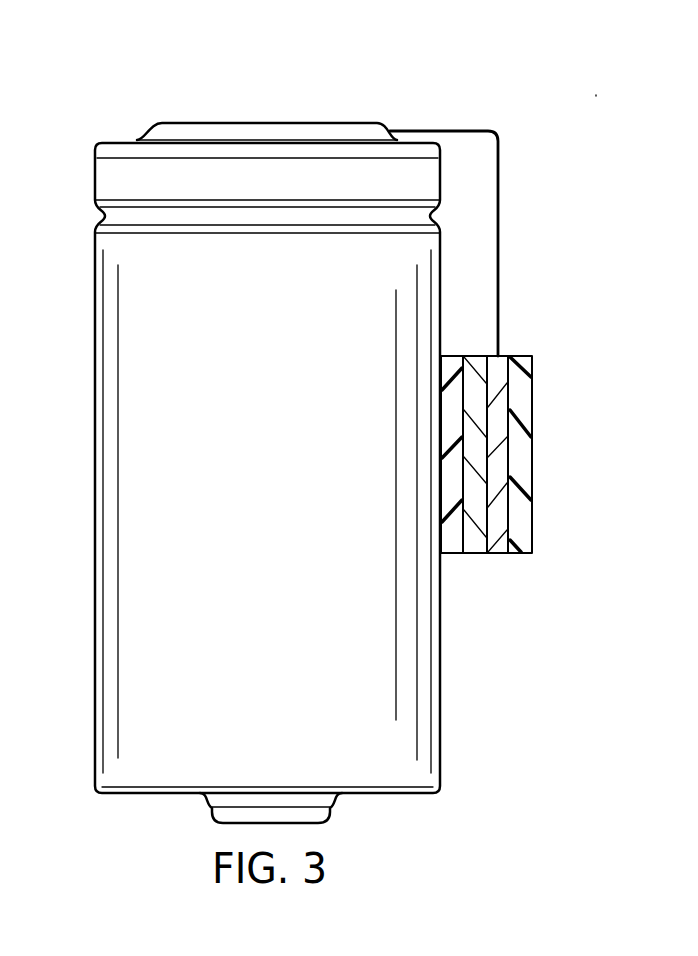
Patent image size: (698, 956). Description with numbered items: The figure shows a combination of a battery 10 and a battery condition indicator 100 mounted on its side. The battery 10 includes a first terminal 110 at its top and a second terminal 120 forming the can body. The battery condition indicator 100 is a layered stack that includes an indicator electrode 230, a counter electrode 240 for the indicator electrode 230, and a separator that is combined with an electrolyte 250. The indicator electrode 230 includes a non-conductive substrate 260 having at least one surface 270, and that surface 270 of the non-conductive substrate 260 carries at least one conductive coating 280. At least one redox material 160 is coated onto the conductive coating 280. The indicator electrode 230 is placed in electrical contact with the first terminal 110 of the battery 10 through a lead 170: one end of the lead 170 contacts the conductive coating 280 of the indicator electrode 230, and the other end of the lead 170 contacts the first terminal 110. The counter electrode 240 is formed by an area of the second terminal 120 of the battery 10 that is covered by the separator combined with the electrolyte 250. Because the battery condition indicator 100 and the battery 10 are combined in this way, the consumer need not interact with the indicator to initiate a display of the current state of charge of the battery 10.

The battery 10 is at (574, 120).
The battery condition indicator 100 is at (503, 457).
The first terminal 110 is at (268, 123).
The second terminal 120 is at (441, 700).
The redox material 160 is at (478, 547).
The lead 170 is at (498, 248).
The indicator electrode 230 is at (503, 496).
The counter electrode 240 is at (441, 400).
The separator combined with an electrolyte 250 is at (453, 547).
The non-conductive substrate 260 is at (523, 398).
The surface 270 is at (517, 507).
The conductive coating 280 is at (502, 461).